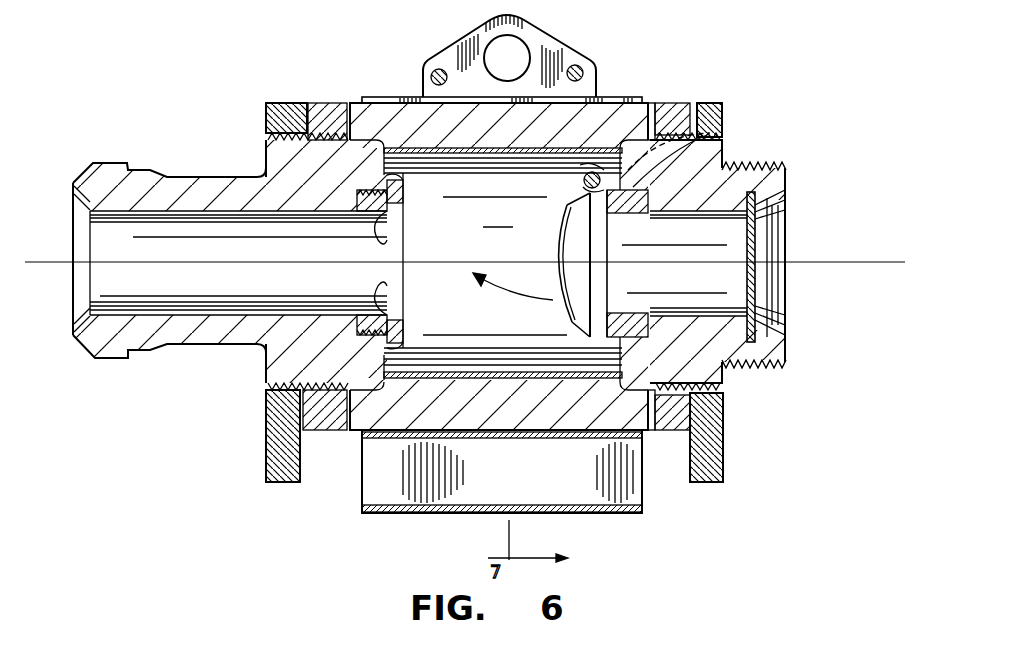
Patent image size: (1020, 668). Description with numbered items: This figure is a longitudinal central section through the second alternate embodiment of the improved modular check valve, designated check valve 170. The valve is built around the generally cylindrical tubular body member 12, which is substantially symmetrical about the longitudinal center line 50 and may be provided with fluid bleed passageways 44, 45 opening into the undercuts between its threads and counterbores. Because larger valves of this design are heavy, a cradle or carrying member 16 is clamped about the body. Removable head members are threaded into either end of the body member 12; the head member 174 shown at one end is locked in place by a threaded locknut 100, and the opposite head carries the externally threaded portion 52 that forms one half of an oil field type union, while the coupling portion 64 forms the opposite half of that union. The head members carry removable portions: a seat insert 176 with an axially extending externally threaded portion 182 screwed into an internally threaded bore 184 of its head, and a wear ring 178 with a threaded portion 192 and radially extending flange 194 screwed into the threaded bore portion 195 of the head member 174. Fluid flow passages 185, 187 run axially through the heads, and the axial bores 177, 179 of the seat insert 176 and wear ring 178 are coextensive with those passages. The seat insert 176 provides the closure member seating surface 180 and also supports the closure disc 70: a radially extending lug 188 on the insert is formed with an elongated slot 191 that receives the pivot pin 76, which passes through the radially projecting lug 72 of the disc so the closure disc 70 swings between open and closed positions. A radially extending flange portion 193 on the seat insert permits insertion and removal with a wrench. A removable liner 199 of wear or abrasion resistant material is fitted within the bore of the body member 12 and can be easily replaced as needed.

The check valve 170 is at (676, 48).
The locknut 100 is at (278, 103).
The coupling portion 64 is at (145, 163).
The head member 174 is at (273, 155).
The fluid bleed passageway 44 is at (350, 103).
The cradle or carrying member 16 is at (392, 94).
The radially extending lug 188 is at (603, 100).
The fluid bleed passageway 45 is at (650, 104).
The body member 12 is at (680, 103).
The elongated slot 191 is at (725, 130).
The internally threaded bore 184 is at (705, 163).
The externally threaded portion 52 is at (780, 168).
The longitudinal center line 50 is at (823, 262).
The pivot pin 76 is at (587, 172).
The radially projecting lug 72 is at (573, 190).
The closure member seating surface 180 is at (560, 216).
The closure disc 70 is at (553, 252).
The radially extending flange 194 is at (395, 175).
The threaded portion 192 is at (378, 220).
The axial bore 179 is at (373, 297).
The removable liner 199 is at (430, 372).
The radially extending flange portion 193 is at (575, 353).
The externally threaded portion 182 is at (640, 225).
The axial bore 177 is at (640, 335).
The fluid flow passage 185 is at (700, 313).
The seat insert 176 is at (645, 345).
The wear ring 178 is at (352, 345).
The threaded bore portion 195 is at (372, 188).
The fluid flow passage 187 is at (207, 312).